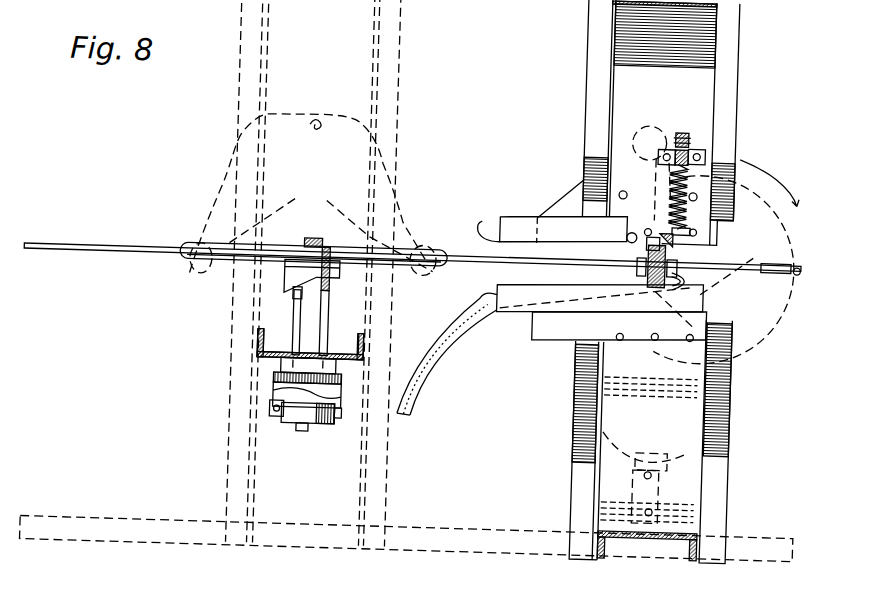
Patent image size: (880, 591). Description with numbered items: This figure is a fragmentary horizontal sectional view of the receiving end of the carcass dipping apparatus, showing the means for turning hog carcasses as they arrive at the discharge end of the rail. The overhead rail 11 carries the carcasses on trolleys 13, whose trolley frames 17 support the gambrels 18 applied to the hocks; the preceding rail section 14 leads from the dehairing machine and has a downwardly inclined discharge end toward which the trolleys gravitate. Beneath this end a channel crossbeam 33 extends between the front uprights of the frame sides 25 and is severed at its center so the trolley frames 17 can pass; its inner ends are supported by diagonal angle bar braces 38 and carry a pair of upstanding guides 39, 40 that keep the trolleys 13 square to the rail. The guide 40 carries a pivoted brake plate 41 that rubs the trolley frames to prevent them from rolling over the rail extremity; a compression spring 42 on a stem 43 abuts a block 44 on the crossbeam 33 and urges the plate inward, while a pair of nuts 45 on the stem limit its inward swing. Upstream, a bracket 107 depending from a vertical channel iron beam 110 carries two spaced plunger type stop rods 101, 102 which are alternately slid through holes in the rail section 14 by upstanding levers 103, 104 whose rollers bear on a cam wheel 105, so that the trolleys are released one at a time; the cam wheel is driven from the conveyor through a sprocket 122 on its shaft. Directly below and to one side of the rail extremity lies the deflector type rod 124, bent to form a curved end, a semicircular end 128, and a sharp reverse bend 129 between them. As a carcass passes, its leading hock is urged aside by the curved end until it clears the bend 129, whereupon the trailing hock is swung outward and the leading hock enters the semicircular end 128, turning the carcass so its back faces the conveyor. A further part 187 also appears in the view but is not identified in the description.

The overhead rail 11 is at (84, 261).
The trolleys 13 is at (296, 254).
The preceding rail section 14 is at (447, 266).
The trolley frames 17 is at (316, 246).
The gambrels 18 is at (424, 250).
The frame sides 25 is at (653, 540).
The crossbeam 33 is at (619, 106).
The diagonal angle bar braces 38 is at (733, 41).
The guide 39 is at (553, 300).
The guide 40 is at (554, 224).
The brake plate 41 is at (640, 227).
The spring 42 is at (684, 183).
The stem 43 is at (770, 181).
The block 44 is at (686, 144).
The nuts 45 is at (682, 128).
The stop rod 101 is at (294, 318).
The stop rod 102 is at (330, 306).
The lever 103 is at (286, 425).
The lever 104 is at (339, 423).
The cam wheel 105 is at (278, 390).
The bracket 107 is at (288, 289).
The channel iron beam 110 is at (364, 340).
The sprocket 122 is at (345, 380).
The deflector type rod 124 is at (445, 374).
The semicircular end 128 is at (609, 448).
The reverse bend 129 is at (700, 277).
The arm edge 187 is at (461, 336).